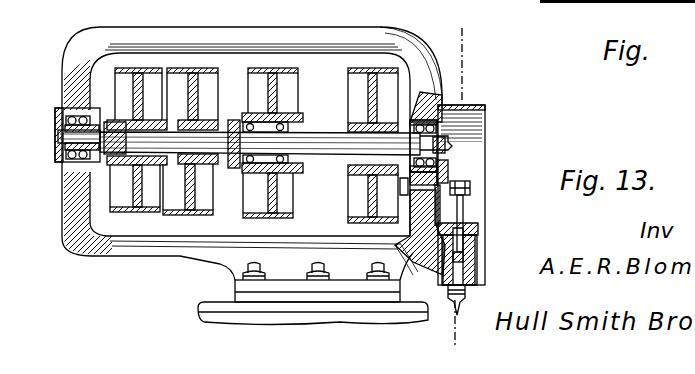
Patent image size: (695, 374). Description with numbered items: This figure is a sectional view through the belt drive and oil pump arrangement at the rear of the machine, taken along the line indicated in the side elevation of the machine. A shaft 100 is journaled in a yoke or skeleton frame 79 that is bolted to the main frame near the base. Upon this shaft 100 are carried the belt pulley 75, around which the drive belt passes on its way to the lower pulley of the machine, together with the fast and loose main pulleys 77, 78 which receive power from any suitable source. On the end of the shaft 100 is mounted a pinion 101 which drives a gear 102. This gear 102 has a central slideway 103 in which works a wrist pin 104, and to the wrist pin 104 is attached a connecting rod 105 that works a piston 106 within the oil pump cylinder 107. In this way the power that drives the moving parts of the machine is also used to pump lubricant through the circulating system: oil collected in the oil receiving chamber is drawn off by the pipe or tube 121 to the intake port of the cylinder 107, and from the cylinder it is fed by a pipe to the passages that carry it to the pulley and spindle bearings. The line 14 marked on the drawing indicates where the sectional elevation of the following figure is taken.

The section line 14— 14 is at (456, 70).
The pulley 75 is at (398, 70).
The fast main pulley 77 is at (198, 78).
The loose main pulley 78 is at (147, 78).
The yoke or skeleton frame 79 is at (326, 35).
The shaft 100 is at (307, 137).
The pinion 101 is at (442, 128).
The gear 102 is at (450, 158).
The central slideway 103 is at (452, 172).
The wrist pin 104 is at (462, 192).
The connecting rod 105 is at (463, 222).
The piston 106 is at (463, 242).
The oil pump cylinder 107 is at (470, 278).
The pipe or tube 121 is at (448, 289).